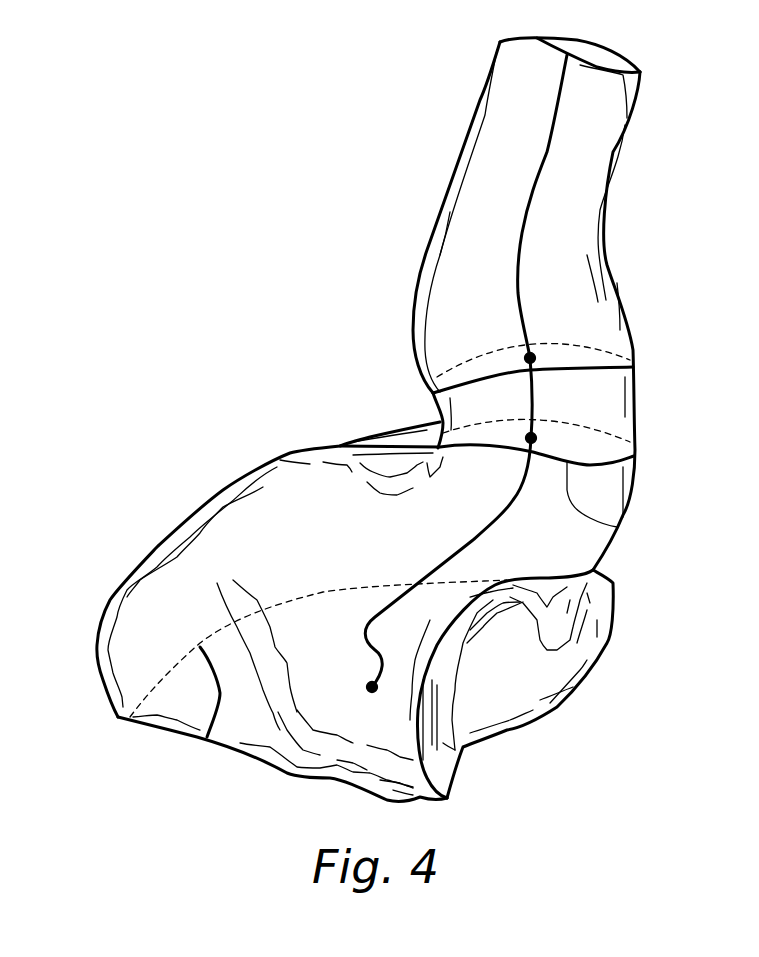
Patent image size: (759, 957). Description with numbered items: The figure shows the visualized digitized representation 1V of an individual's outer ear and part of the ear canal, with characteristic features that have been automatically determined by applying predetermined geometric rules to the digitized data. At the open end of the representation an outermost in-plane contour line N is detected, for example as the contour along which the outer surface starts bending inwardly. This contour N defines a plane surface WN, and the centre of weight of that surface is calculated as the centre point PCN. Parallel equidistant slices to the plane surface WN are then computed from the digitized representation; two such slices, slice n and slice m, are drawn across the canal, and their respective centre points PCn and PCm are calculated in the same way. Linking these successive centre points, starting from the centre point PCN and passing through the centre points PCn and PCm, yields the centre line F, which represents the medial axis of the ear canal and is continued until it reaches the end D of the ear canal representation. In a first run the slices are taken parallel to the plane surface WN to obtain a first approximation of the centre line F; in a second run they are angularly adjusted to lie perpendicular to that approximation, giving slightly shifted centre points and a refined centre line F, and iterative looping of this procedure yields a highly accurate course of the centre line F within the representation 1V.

The visualized digitized representation 1V is at (630, 156).
The end of canal D is at (597, 53).
The center line F is at (517, 237).
The centre point of slice m PCm is at (530, 358).
The slice m is at (563, 369).
The centre point of slice n PCn is at (531, 438).
The slice n is at (617, 527).
The outermost in-plane contour line N is at (255, 753).
The plane surface WN is at (207, 737).
The centre point of plane surface PCN is at (372, 687).